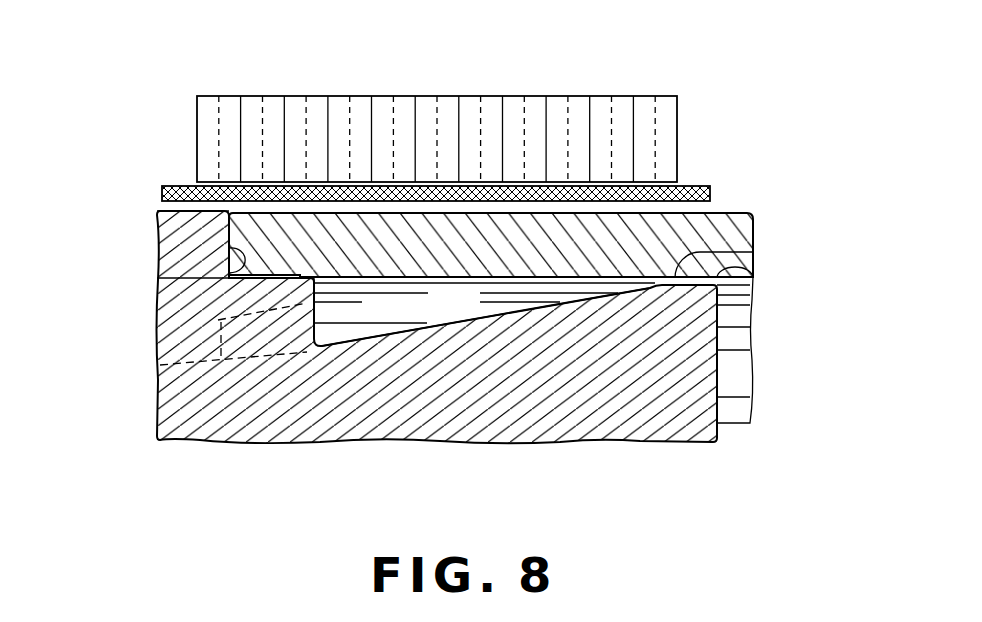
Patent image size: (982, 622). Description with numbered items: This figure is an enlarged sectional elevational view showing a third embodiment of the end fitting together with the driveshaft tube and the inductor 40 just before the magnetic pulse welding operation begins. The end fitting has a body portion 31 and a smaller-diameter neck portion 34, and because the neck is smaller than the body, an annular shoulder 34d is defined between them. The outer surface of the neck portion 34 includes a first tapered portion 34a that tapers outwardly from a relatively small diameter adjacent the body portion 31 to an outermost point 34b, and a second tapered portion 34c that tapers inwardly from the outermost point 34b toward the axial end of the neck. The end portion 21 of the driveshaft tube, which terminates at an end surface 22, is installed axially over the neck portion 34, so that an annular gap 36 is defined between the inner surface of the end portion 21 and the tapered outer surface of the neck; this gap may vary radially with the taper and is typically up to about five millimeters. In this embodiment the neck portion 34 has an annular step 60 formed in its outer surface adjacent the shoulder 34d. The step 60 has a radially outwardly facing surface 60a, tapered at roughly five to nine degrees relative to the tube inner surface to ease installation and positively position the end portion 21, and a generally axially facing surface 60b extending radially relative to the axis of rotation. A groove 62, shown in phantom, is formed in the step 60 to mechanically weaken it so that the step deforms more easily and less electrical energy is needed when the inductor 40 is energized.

The inductor 40 is at (573, 98).
The end portion 21 is at (738, 233).
The end surface 22 is at (228, 232).
The body portion 31 is at (177, 412).
The neck portion 34 is at (680, 420).
The annular gap 36 is at (473, 309).
The annular step 60 is at (240, 292).
The radially outwardly facing surface 60a is at (294, 279).
The axially facing surface 60b is at (311, 340).
The first tapered portion 34a is at (498, 312).
The outermost point 34b is at (753, 252).
The second tapered portion 34c is at (755, 277).
The annular shoulder 34d is at (228, 277).
The groove 62 is at (160, 365).